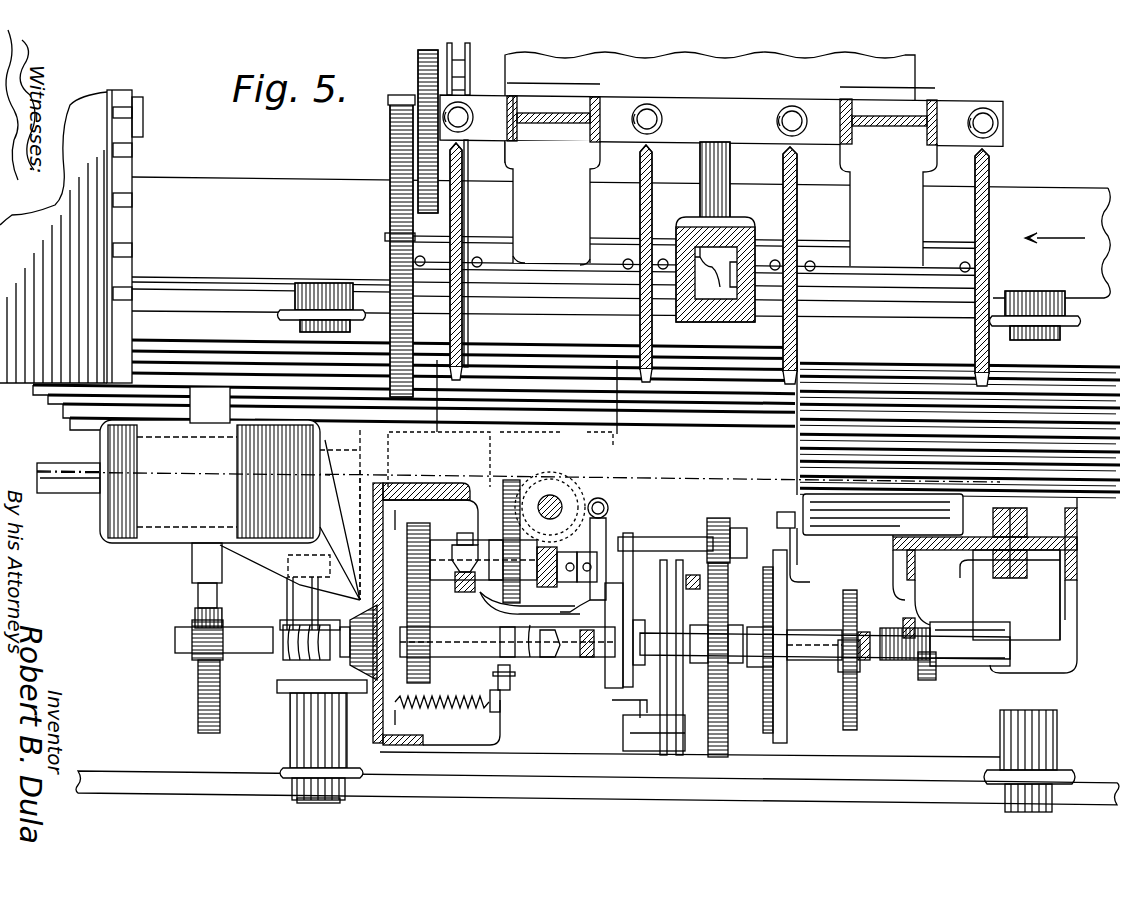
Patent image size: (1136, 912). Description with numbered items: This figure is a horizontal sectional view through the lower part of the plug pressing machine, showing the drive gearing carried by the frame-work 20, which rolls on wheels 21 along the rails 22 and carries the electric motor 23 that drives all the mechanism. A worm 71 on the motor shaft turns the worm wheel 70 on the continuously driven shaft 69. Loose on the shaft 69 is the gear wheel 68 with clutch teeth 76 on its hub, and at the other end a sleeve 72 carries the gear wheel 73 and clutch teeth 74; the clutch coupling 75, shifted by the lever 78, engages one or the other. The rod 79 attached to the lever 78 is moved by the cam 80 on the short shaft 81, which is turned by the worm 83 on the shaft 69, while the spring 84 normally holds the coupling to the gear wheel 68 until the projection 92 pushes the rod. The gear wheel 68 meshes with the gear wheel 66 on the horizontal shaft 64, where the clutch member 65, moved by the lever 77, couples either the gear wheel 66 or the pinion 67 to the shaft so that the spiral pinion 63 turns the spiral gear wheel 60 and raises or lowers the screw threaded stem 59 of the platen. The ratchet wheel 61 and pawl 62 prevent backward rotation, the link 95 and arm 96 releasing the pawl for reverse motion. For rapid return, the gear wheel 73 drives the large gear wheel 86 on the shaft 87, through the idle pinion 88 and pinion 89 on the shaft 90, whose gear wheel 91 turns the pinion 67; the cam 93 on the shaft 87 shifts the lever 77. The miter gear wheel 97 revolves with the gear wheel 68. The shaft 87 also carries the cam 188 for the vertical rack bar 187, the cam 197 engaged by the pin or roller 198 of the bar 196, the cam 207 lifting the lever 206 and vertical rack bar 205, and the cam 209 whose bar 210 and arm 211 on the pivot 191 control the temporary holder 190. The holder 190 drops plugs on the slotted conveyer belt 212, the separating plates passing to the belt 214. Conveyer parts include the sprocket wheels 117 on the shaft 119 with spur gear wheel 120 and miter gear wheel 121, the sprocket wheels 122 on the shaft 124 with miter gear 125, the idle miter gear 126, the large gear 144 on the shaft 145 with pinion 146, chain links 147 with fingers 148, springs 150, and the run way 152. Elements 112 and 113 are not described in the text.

The frame-work 20 is at (1068, 598).
The wheels 21 is at (305, 290).
The rails 22 is at (258, 305).
The electric motor 23 is at (183, 507).
The screw threaded stem 59 is at (556, 503).
The spiral gear wheel 60 is at (541, 478).
The ratchet wheel 61 is at (582, 502).
The pawl 62 is at (606, 520).
The spiral pinion 63 is at (612, 600).
The horizontal shaft 64 is at (545, 588).
The clutch member 65 is at (440, 560).
The gear wheel 66 is at (362, 495).
The pinion 67 is at (460, 590).
The gear wheel 68 is at (445, 705).
The shaft 69 is at (730, 633).
The worm wheel 70 is at (198, 697).
The worm 71 is at (192, 660).
The sleeve 72 is at (630, 670).
The gear wheel 73 is at (727, 678).
The clutch teeth 74 is at (568, 665).
The clutch coupling 75 is at (518, 660).
The clutch teeth 76 is at (462, 592).
The lever 77 is at (465, 535).
The lever 78 is at (505, 690).
The rod 79 is at (385, 740).
The cam 80 is at (283, 673).
The short shaft 81 is at (292, 697).
The worm 83 is at (290, 625).
The spring 84 is at (490, 708).
The large gear wheel 86 is at (728, 706).
The shaft 87 is at (812, 662).
The idle pinion 88 is at (718, 518).
The pinion 89 is at (733, 528).
The shaft 90 is at (645, 540).
The gear wheel 91 is at (510, 540).
The projection 92 is at (320, 690).
The cam 93 is at (425, 668).
The link 95 is at (590, 580).
The arm 96 is at (620, 540).
The miter gear wheel 97 is at (357, 590).
The key 112 is at (586, 675).
The lever arm 113 is at (612, 612).
The sprocket wheels 117 is at (455, 215).
The shaft 119 is at (719, 283).
The spur gear wheel 120 is at (392, 236).
The miter gear wheel 121 is at (690, 317).
The sprocket wheels 122 is at (797, 335).
The shaft 124 is at (715, 269).
The miter gear 125 is at (750, 322).
The idle miter gear 126 is at (745, 225).
The large gear 144 is at (420, 68).
The shaft 145 is at (392, 120).
The pinion 146 is at (392, 102).
The chain link 147 is at (125, 172).
The finger 148 is at (125, 112).
The springs 150 is at (655, 110).
The run way 152 is at (53, 237).
The vertical rack bar 187 is at (908, 618).
The cam 188 is at (928, 670).
The temporary holder 190 is at (820, 527).
The pivot 191 is at (777, 520).
The bar 196 is at (870, 660).
The cam 197 is at (850, 730).
The pin or roller 198 is at (858, 672).
The vertical rack bar 205 is at (700, 583).
The lever 206 is at (698, 745).
The cam 207 is at (655, 735).
The cam 209 is at (770, 702).
The bar 210 is at (782, 600).
The arm 211 is at (798, 550).
The slotted conveyer belt 212 is at (815, 440).
The belt 214 is at (290, 178).